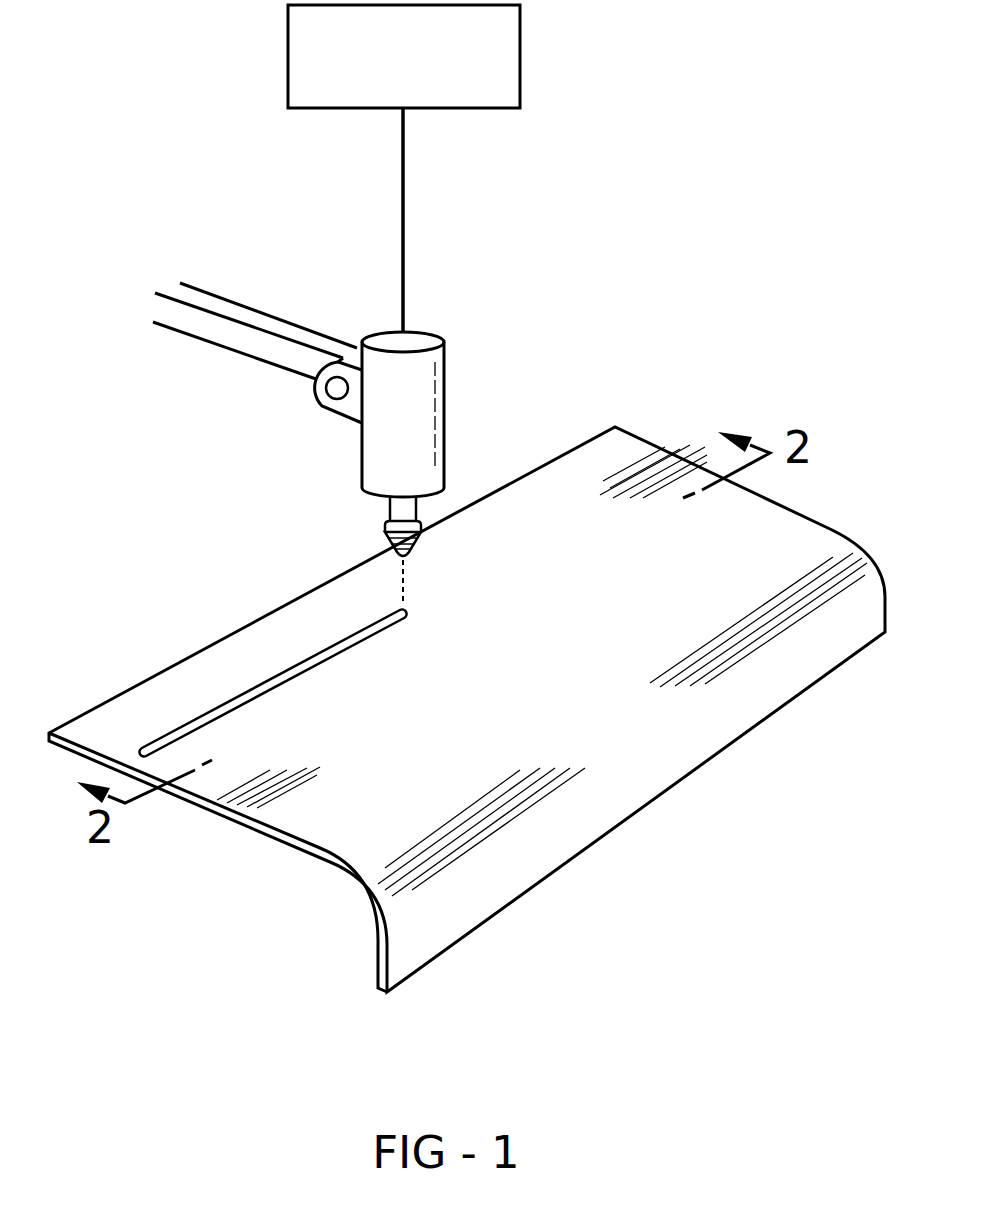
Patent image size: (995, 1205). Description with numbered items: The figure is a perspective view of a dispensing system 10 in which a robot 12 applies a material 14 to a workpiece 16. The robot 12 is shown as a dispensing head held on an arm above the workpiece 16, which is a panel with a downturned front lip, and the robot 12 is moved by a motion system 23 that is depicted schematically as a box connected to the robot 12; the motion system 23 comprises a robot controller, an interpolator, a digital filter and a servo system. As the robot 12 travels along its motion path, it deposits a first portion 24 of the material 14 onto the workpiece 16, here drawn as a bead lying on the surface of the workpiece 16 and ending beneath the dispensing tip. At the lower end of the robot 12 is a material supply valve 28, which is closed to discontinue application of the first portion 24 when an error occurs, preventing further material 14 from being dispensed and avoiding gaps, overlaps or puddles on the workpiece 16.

The dispensing system 10 is at (530, 339).
The robot 12 is at (435, 402).
The material 14 is at (270, 661).
The workpiece 16 is at (564, 657).
The motion system 23 is at (520, 47).
The first portion of the material 24 is at (193, 717).
The material supply valve 28 is at (398, 556).